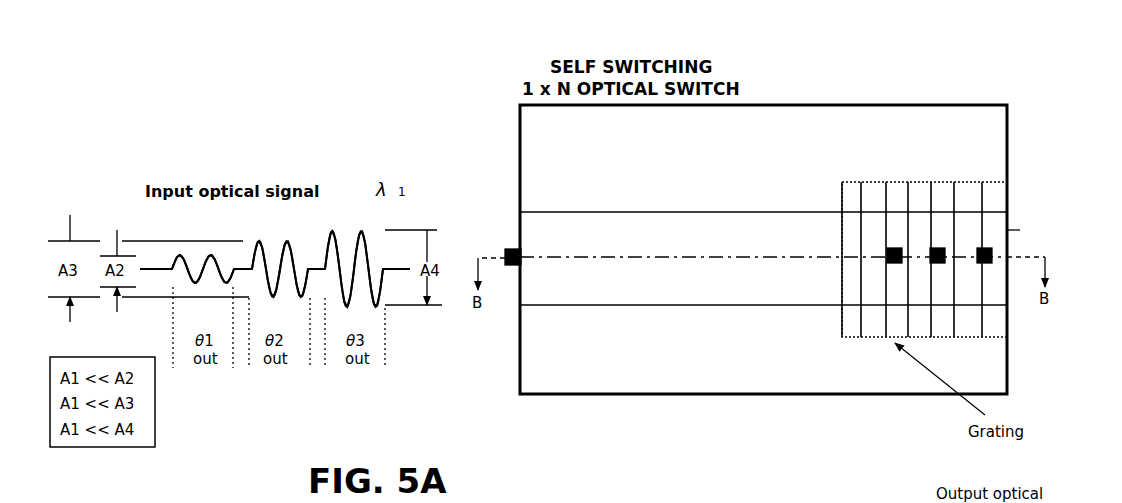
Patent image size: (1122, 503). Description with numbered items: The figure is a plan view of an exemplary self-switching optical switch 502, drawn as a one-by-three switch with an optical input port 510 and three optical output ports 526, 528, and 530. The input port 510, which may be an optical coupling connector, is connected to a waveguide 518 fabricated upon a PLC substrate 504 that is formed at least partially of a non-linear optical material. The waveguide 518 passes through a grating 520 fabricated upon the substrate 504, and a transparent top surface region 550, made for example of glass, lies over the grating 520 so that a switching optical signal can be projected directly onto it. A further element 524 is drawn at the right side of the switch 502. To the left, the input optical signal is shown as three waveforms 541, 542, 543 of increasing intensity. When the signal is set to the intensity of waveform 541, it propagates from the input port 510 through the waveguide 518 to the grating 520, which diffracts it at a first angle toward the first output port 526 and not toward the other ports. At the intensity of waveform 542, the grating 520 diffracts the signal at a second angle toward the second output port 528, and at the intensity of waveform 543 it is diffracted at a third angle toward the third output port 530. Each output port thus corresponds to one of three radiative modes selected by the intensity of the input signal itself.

The 1×N optical switch 502 is at (1054, 107).
The PLC substrate 504 is at (782, 130).
The optical input port 510 is at (513, 248).
The waveguide 518 is at (765, 241).
The grating 520 is at (862, 340).
The output waveguide 524 is at (1008, 226).
The first output port 526 is at (894, 248).
The second output port 528 is at (937, 248).
The third output port 530 is at (984, 248).
The waveform 541 is at (196, 253).
The waveform 542 is at (271, 248).
The waveform 543 is at (343, 237).
The top surface region 550 is at (857, 320).